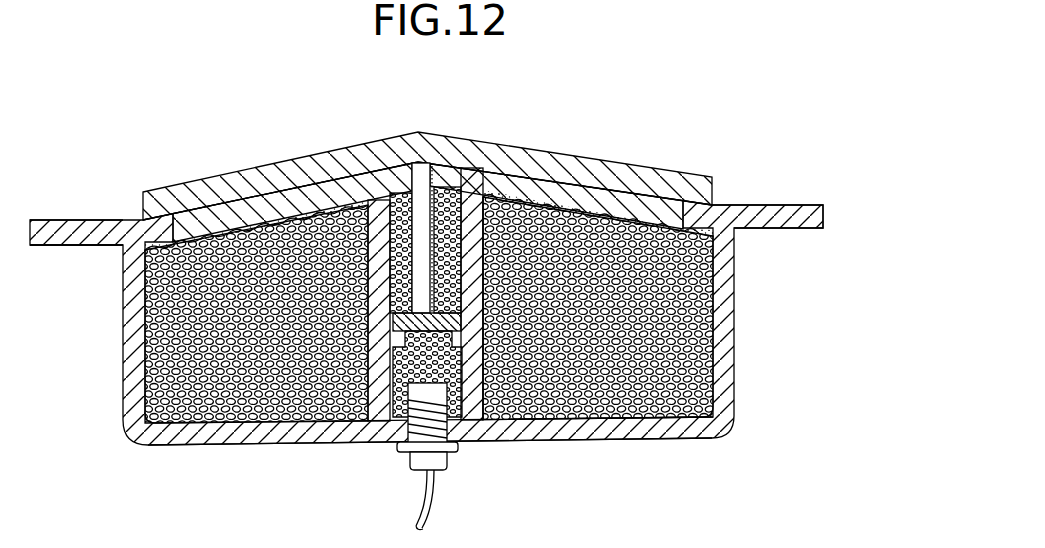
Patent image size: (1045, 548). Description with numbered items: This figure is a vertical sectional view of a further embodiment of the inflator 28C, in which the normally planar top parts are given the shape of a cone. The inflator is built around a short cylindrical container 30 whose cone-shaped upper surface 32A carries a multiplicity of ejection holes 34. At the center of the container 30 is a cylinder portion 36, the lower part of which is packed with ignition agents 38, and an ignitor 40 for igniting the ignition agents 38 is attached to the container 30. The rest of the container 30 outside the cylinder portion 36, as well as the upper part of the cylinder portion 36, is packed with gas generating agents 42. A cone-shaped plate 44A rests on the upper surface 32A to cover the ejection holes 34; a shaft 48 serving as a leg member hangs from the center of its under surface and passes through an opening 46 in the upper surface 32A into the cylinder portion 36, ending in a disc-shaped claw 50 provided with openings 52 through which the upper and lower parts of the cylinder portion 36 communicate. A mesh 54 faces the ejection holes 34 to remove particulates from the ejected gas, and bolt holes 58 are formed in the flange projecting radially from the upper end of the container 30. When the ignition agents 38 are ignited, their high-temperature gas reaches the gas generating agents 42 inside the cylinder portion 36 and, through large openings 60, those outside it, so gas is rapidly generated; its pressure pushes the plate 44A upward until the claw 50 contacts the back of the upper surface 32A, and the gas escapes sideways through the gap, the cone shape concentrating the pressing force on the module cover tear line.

The inflator 28C is at (685, 436).
The container 30 is at (560, 440).
The upper surface 32A is at (257, 197).
The ejection holes 34 is at (200, 225).
The cylinder portion 36 is at (345, 400).
The ignition agents 38 is at (505, 388).
The ignitor 40 is at (400, 446).
The gas generating agents 42 is at (637, 392).
The plate 44A is at (355, 157).
The opening 46 is at (440, 170).
The shaft 48 is at (598, 305).
The claw 50 is at (462, 322).
The openings 52 is at (398, 324).
The mesh 54 is at (195, 252).
The bolt holes 58 is at (72, 222).
The large openings 60 is at (43, 247).